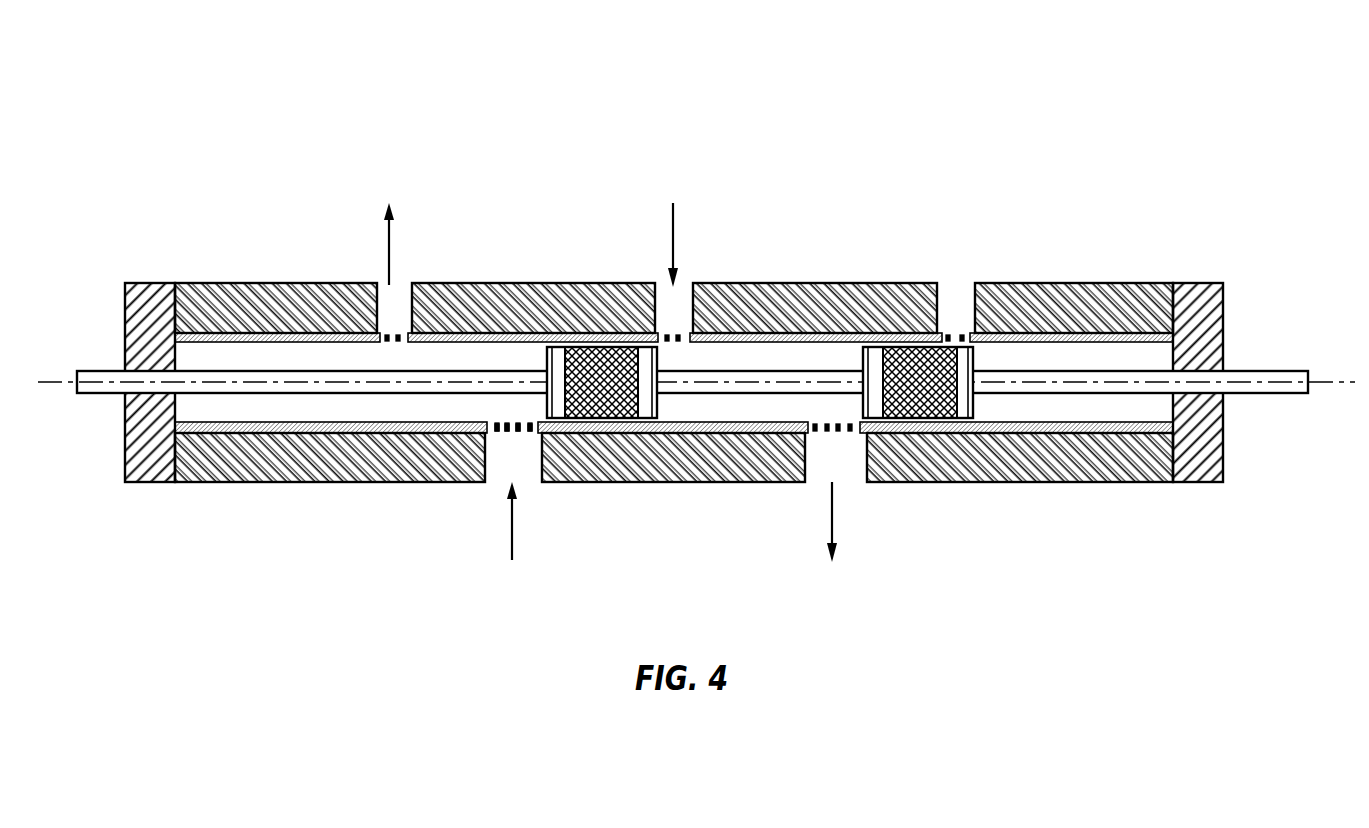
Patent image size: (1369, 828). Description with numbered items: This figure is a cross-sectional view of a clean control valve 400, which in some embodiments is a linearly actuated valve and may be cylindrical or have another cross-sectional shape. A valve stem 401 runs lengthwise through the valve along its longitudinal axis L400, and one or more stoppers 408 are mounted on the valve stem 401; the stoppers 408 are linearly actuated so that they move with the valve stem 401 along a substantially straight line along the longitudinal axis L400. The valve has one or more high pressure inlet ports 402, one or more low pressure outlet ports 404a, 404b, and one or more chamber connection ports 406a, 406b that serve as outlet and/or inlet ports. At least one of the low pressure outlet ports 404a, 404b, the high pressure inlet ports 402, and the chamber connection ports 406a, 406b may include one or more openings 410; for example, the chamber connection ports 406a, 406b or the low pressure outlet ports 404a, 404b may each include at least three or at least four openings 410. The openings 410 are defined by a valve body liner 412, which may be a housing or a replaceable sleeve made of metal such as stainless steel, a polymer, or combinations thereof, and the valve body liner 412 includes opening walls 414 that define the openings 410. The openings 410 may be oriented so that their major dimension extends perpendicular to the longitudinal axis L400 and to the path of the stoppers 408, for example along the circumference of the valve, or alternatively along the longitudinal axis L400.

The clean control valve 400 is at (240, 152).
The valve stem 401 is at (1117, 385).
The high pressure inlet port 402 is at (684, 298).
The low pressure outlet port 404a is at (400, 298).
The low pressure outlet port 404b is at (957, 298).
The chamber connection port 406a is at (500, 445).
The chamber connection port 406b is at (845, 455).
The stopper 408 is at (598, 367).
The opening 410 is at (525, 440).
The valve body liner 412 is at (291, 433).
The opening wall 414 is at (378, 292).
The longitudinal axis L400 is at (1328, 383).